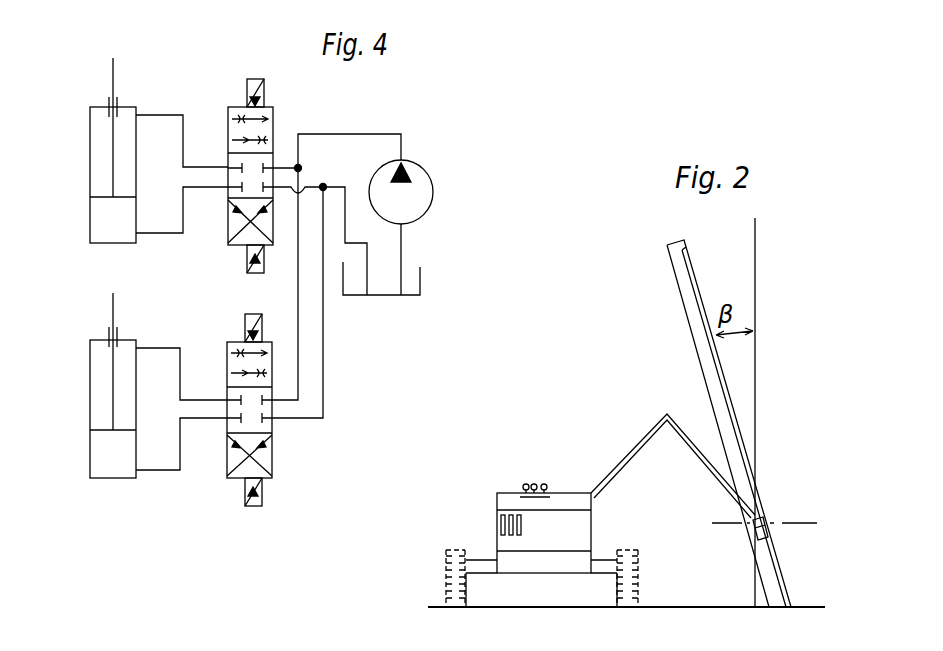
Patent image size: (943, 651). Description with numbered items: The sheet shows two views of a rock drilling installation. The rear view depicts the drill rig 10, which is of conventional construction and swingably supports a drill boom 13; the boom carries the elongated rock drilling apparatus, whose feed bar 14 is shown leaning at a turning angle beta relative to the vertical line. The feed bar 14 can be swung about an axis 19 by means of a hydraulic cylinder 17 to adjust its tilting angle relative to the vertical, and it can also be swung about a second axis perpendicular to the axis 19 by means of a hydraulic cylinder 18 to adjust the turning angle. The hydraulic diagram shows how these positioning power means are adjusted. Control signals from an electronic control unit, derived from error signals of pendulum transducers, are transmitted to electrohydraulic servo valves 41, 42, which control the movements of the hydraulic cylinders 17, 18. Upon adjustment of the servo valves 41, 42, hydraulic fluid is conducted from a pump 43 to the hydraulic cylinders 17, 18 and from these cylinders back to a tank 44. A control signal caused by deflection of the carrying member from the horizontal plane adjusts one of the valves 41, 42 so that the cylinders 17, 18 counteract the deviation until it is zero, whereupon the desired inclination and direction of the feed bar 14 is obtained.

In FIG. 2, the drill rig 10 is at (644, 596).
In FIG. 2, the drill boom 13 is at (670, 430).
In FIG. 2, the feed bar 14 is at (695, 336).
In FIG. 4, the hydraulic cylinder 17 is at (90, 163).
In FIG. 4, the hydraulic cylinder 18 is at (88, 412).
In FIG. 2, the axis 19 is at (788, 522).
In FIG. 4, the electrohydraulic servo valve 41 is at (277, 105).
In FIG. 4, the electrohydraulic servo valve 42 is at (273, 477).
In FIG. 4, the pump 43 is at (424, 187).
In FIG. 4, the tank 44 is at (421, 283).